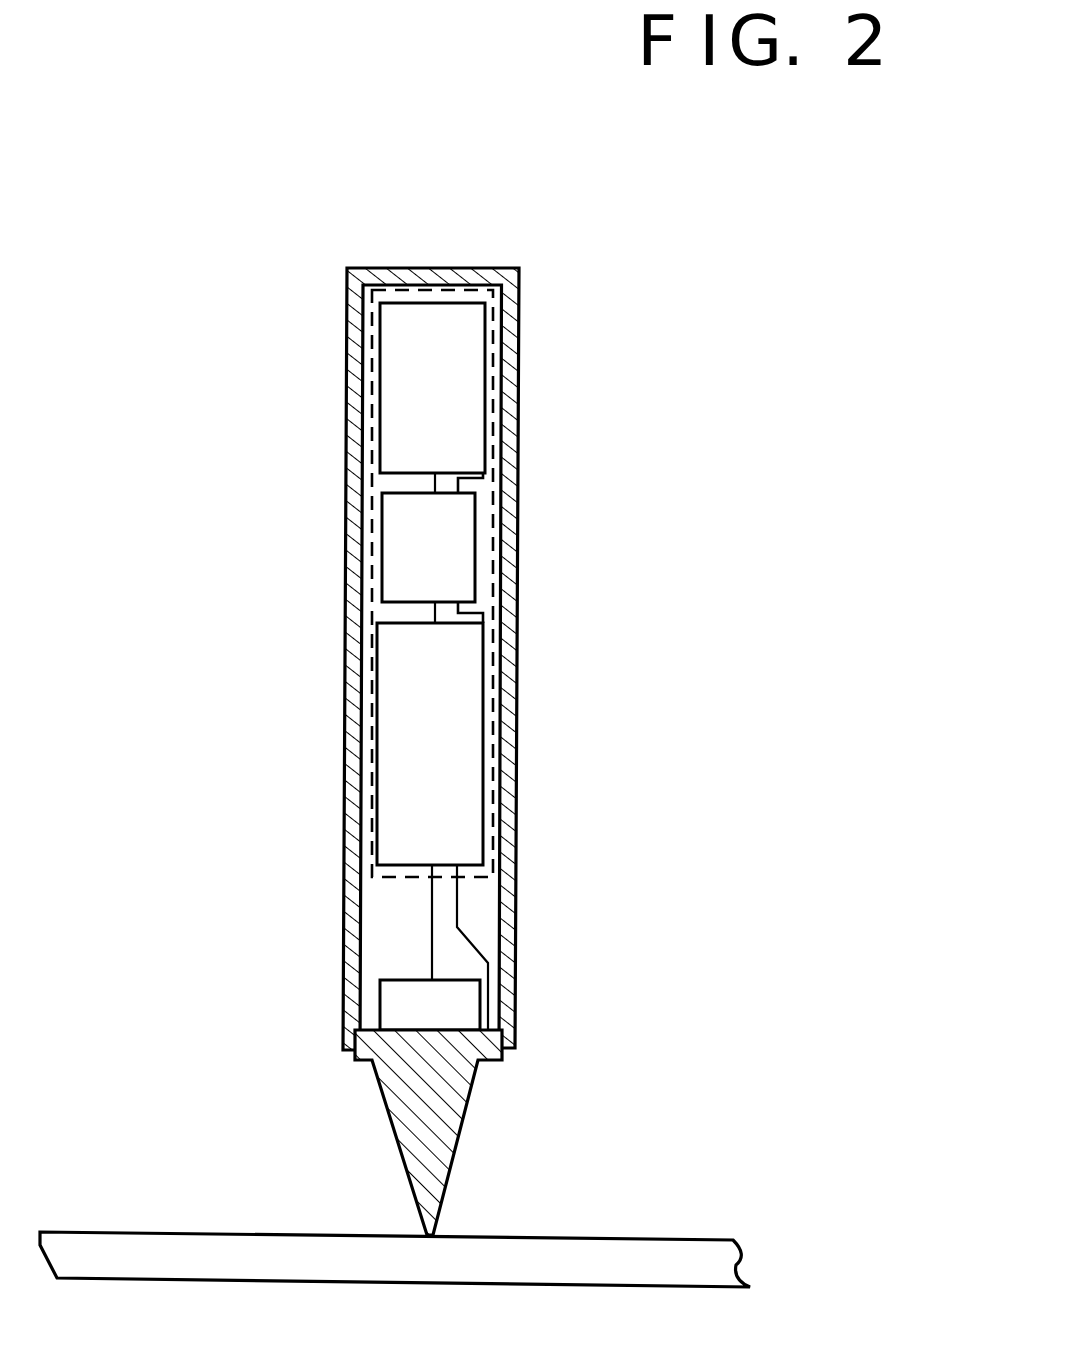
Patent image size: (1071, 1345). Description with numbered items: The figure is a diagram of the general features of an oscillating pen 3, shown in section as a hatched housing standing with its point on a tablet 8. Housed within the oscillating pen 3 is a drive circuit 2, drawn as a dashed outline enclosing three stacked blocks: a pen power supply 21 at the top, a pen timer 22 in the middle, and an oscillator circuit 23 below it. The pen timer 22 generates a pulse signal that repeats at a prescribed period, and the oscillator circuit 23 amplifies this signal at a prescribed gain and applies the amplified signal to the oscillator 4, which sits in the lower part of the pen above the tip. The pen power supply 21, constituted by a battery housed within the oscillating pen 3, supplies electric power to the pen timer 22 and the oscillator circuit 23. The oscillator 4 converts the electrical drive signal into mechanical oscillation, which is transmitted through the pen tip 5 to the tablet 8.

The drive circuit 2 is at (397, 883).
The oscillating pen 3 is at (512, 400).
The oscillator 4 is at (390, 1003).
The pen tip 5 is at (397, 1143).
The tablet 8 is at (697, 1238).
The pen power supply 21 is at (447, 318).
The pen timer 22 is at (463, 542).
The oscillator circuit 23 is at (468, 740).